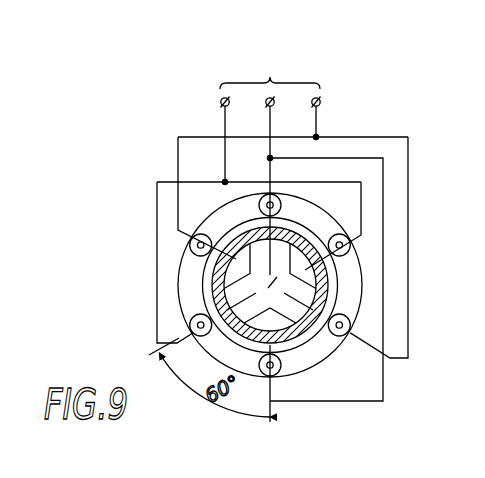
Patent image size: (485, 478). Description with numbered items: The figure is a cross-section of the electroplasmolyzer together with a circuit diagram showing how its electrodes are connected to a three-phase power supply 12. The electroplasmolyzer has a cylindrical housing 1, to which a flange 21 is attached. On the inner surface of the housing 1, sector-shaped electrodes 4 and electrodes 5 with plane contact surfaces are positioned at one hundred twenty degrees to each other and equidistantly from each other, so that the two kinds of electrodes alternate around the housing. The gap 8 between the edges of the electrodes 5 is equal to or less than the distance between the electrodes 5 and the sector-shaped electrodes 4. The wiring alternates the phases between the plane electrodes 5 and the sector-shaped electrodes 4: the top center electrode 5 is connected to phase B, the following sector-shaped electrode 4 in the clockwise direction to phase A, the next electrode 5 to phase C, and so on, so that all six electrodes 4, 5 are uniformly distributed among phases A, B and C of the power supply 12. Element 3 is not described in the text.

The cylindrical housing 1 is at (231, 225).
The pole piece 3 is at (316, 297).
The sector-shaped electrode 4 is at (215, 269).
The electrode with plane contact surface 5 is at (267, 238).
The gap 8 is at (268, 295).
The three-phase power supply 12 is at (282, 237).
The flange 21 is at (190, 303).